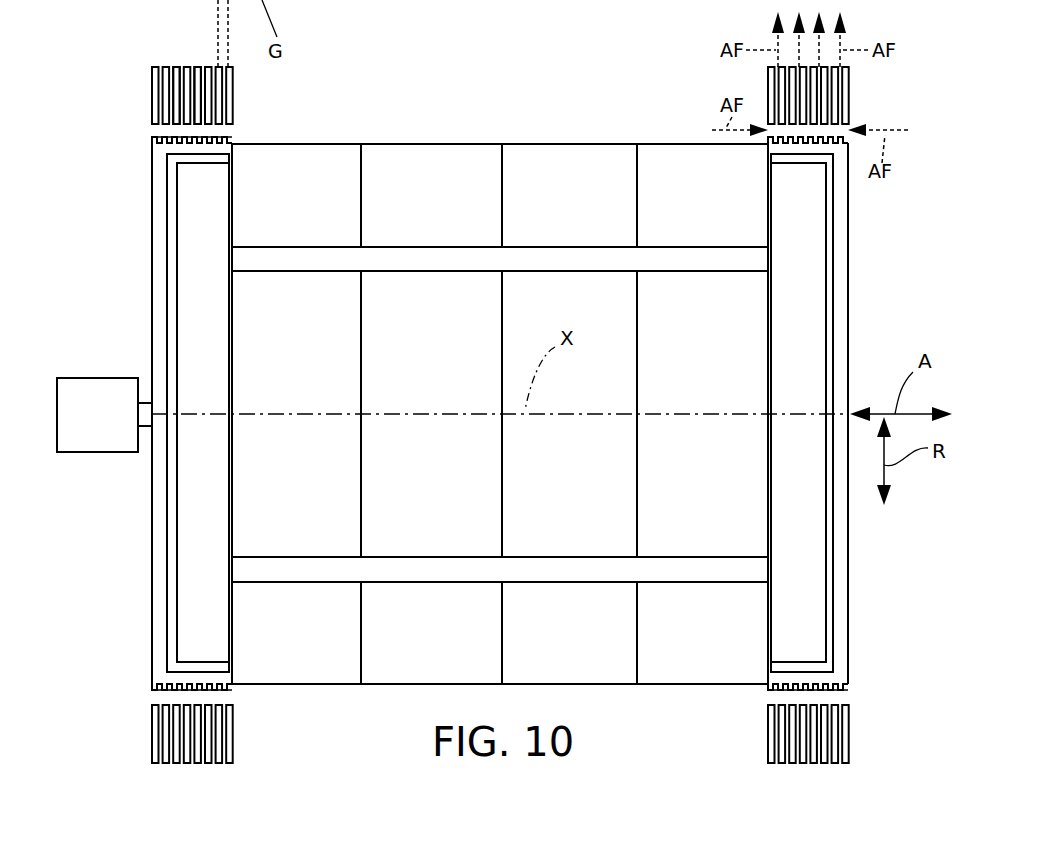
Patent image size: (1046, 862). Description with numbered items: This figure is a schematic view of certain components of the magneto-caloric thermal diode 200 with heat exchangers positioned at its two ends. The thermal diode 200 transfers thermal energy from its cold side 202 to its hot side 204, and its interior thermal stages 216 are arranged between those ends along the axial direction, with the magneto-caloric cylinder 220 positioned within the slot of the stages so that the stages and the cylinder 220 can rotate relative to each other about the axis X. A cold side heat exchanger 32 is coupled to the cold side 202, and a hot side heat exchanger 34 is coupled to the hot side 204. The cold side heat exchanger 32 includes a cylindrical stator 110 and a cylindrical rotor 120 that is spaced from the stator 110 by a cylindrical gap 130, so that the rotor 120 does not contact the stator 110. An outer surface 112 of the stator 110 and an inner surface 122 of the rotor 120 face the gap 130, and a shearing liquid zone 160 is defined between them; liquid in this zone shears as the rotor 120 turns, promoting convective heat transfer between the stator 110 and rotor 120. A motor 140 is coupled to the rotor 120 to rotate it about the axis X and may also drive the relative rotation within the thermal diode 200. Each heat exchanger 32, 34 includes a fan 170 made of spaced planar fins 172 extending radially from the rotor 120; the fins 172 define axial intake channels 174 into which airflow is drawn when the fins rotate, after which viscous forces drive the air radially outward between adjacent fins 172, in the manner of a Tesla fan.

The magneto-caloric thermal diode 200 is at (507, 130).
The interior thermal stages 216 is at (298, 172).
The magneto-caloric cylinder 220 is at (407, 258).
The cold side heat exchanger 32 is at (150, 262).
The hot side heat exchanger 34 is at (856, 260).
The cylindrical rotor 120 is at (162, 326).
The cylindrical stator 110 is at (205, 527).
The shearing liquid zone 160 is at (177, 163).
The surface of cylindrical rotor 122 is at (208, 668).
The cylindrical gap 130 is at (236, 669).
The surface of cylindrical stator 112 is at (182, 668).
The axial intake channels 174 is at (150, 133).
The cold side 202 is at (233, 690).
The hot side 204 is at (768, 686).
The fan 170 is at (143, 68).
The spaced planar fins 172 is at (197, 67).
The motor 140 is at (104, 415).